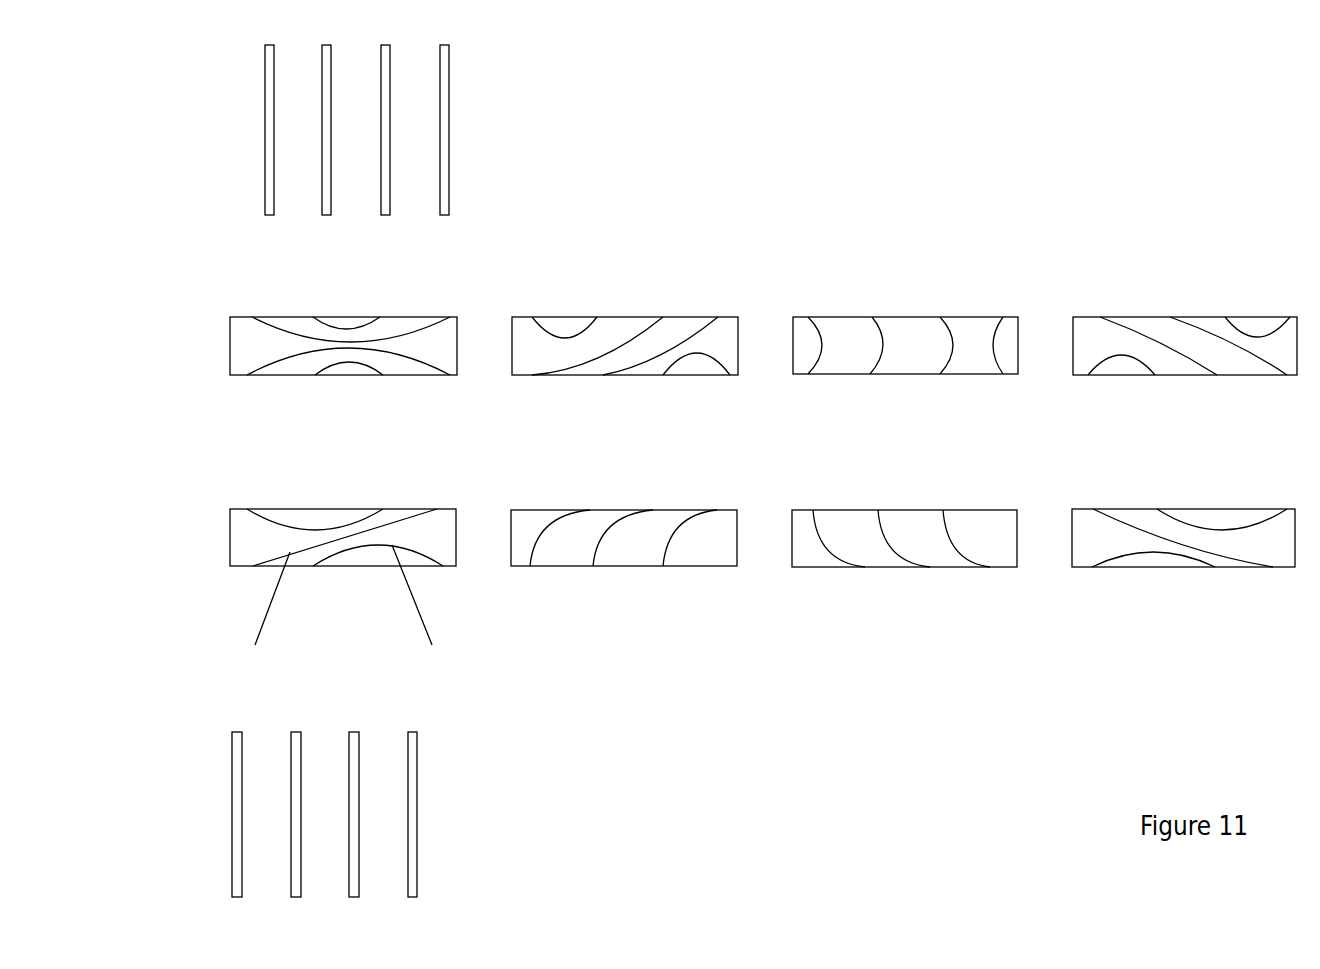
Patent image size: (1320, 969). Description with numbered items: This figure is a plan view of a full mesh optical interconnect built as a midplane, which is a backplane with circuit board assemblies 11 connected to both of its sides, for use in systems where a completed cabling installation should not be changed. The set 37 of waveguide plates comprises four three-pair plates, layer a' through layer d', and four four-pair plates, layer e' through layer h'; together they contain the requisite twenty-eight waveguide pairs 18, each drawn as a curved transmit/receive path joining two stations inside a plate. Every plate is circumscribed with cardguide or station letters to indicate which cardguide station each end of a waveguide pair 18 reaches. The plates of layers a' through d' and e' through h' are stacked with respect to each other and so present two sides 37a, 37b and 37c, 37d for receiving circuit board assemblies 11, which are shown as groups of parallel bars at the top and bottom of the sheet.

The circuit board assembly 11 is at (270, 203).
The set of waveguide plates 37 is at (833, 188).
The side for receiving circuit board assemblies 37a is at (848, 567).
The side for receiving circuit board assemblies 37b is at (557, 510).
The side for receiving circuit board assemblies 37c is at (397, 375).
The side for receiving circuit board assemblies 37d is at (857, 317).
The waveguide pairs 18 is at (997, 333).